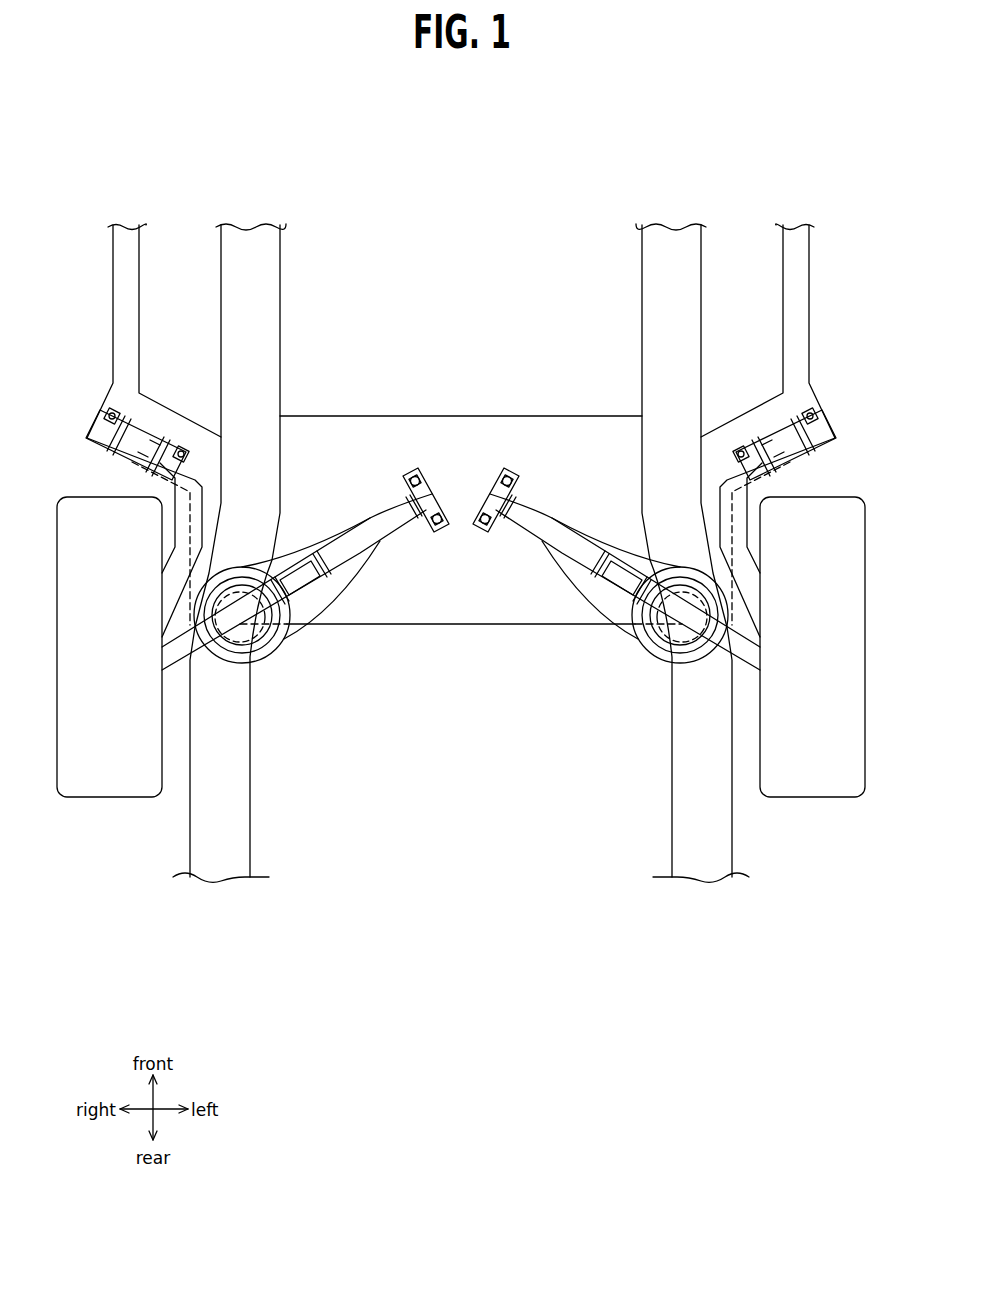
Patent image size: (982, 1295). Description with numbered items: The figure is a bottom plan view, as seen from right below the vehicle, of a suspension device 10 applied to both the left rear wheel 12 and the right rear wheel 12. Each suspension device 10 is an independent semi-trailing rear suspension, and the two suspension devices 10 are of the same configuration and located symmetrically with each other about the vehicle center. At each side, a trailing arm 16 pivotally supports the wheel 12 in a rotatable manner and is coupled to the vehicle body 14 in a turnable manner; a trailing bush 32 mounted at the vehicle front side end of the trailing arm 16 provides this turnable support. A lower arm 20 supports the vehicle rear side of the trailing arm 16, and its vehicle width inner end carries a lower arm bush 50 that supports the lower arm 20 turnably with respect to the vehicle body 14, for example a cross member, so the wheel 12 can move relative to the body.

The suspension device 10 is at (292, 667).
The rear wheel 12 is at (107, 799).
The vehicle body 14 is at (101, 409).
The trailing arm 16 is at (160, 522).
The lower arm 20 is at (326, 595).
The trailing bush 32 is at (157, 412).
The lower arm bush 50 is at (433, 490).